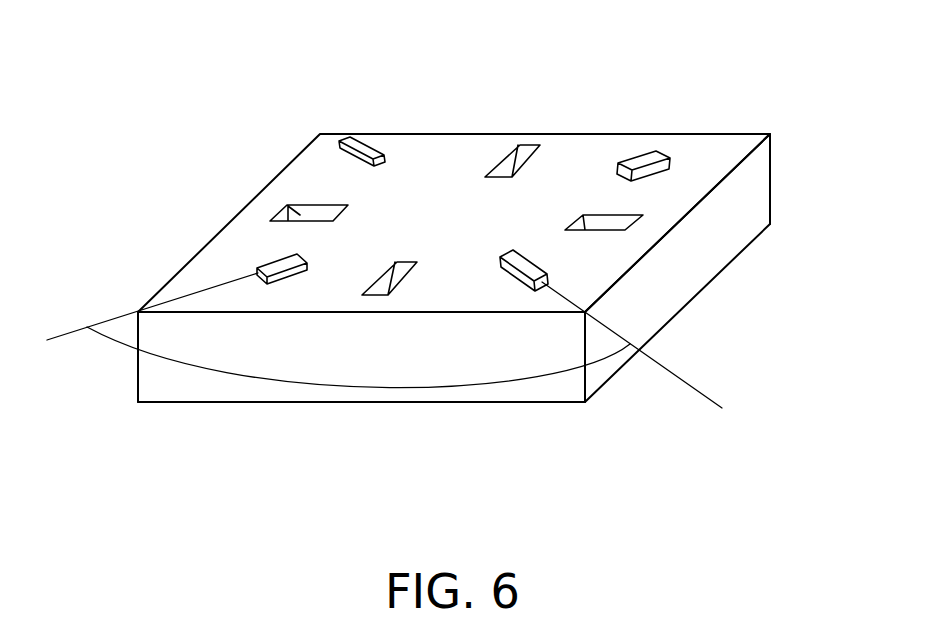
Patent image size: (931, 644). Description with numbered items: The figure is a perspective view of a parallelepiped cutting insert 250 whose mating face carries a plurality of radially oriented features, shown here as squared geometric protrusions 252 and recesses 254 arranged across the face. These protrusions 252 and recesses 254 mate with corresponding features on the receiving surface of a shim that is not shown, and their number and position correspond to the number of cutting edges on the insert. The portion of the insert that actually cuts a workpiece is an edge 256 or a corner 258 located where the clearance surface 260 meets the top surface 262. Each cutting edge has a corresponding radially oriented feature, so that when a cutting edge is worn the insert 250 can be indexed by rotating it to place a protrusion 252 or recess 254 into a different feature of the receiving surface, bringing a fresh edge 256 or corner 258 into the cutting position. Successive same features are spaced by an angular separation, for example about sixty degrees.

The cutting insert 250 is at (453, 266).
The protrusions 252 is at (360, 140).
The recesses 254 is at (525, 144).
The edge 256 is at (685, 308).
The corner 258 is at (582, 413).
The clearance surface 260 is at (722, 236).
The top surface 262 is at (356, 408).